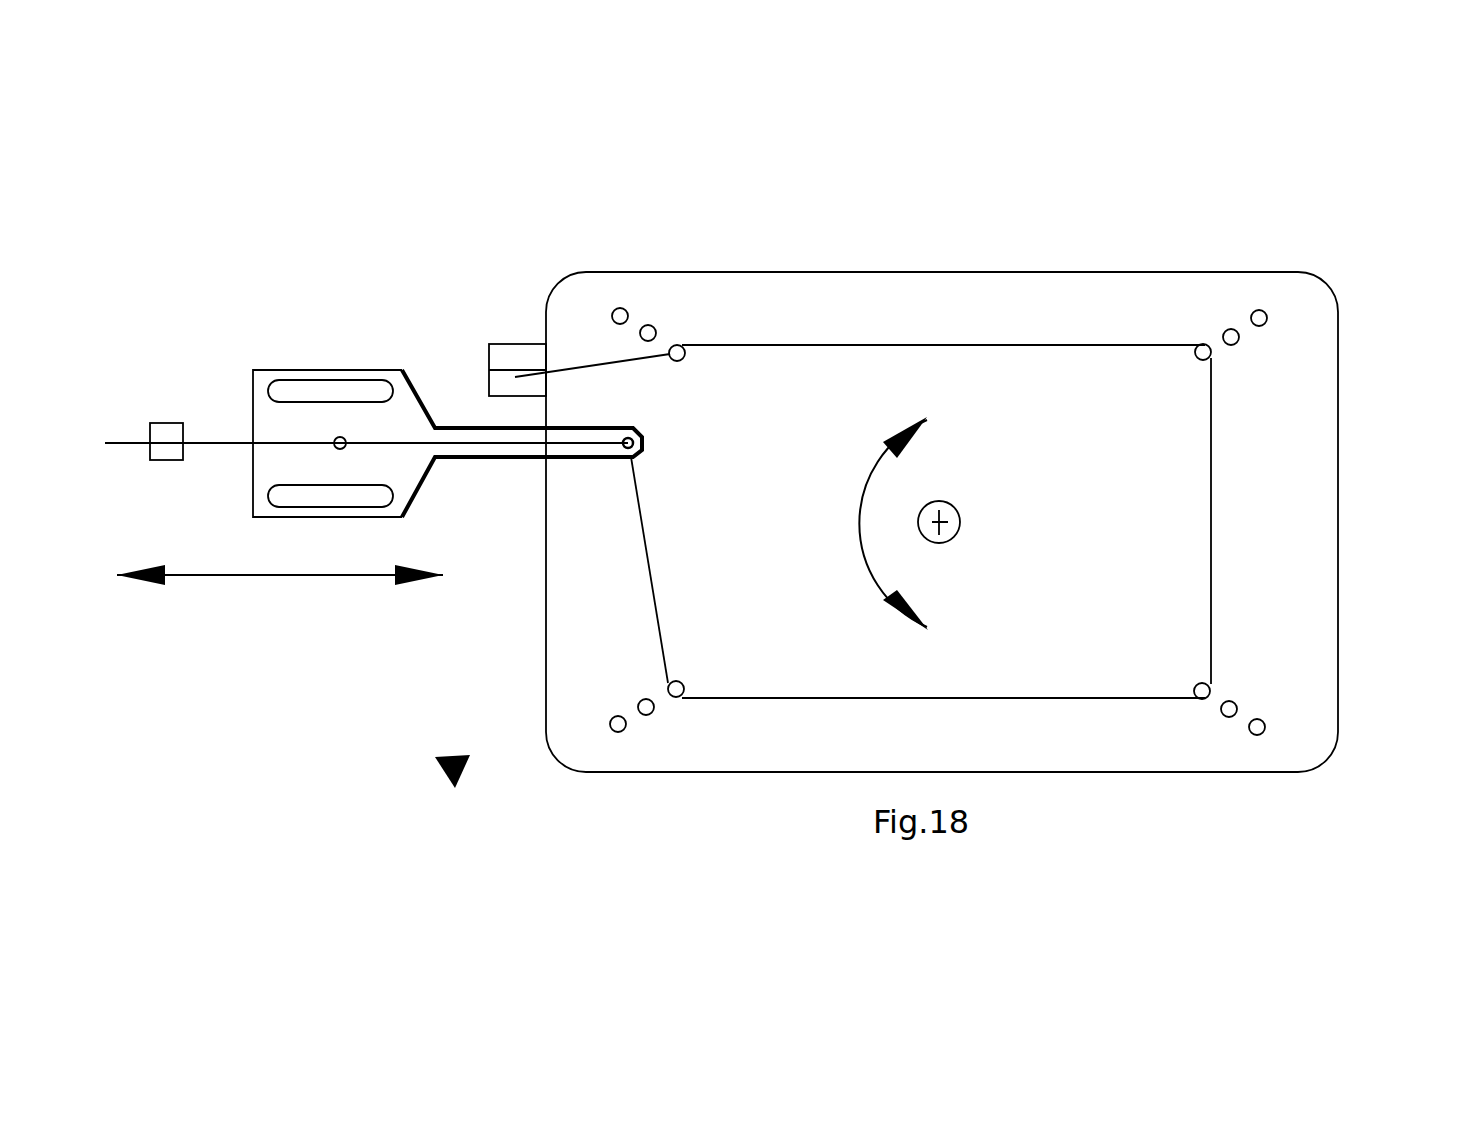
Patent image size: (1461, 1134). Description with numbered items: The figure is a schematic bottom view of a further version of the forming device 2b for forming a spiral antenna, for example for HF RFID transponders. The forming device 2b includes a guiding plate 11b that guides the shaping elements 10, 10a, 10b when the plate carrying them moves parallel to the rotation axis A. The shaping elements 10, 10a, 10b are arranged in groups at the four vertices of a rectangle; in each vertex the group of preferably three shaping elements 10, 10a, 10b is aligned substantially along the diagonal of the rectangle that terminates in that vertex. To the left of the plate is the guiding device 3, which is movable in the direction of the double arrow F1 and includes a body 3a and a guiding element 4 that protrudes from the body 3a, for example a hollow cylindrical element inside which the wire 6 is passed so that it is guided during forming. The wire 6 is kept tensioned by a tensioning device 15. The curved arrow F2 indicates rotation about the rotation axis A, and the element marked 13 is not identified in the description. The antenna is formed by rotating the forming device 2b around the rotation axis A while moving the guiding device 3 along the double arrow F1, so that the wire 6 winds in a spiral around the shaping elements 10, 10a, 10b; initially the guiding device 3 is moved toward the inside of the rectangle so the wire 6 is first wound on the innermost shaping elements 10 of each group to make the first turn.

The forming device 2b is at (445, 768).
The guiding device 3 is at (364, 350).
The body 3a is at (282, 423).
The guiding element 4 is at (643, 437).
The wire 6 is at (485, 444).
The shaping elements 10 is at (684, 348).
The shaping elements 10a is at (655, 332).
The shaping elements 10b is at (622, 307).
The guiding plate 11b is at (1065, 297).
The guide block 13 is at (518, 357).
The tensioning device 15 is at (172, 428).
The rotation axis A is at (948, 520).
The double arrow F1 is at (280, 561).
The rotation direction F2 is at (870, 523).